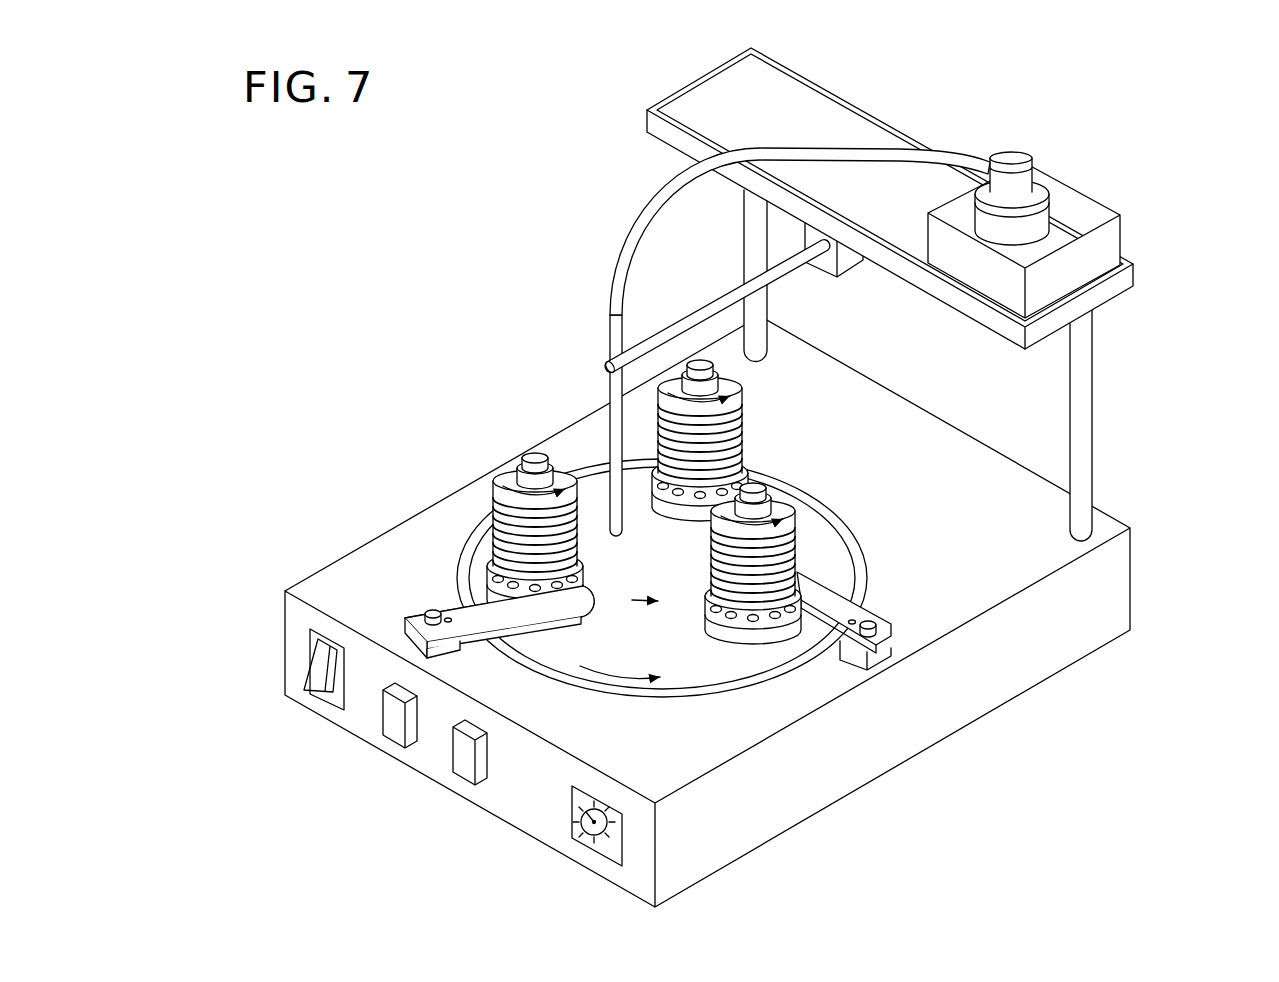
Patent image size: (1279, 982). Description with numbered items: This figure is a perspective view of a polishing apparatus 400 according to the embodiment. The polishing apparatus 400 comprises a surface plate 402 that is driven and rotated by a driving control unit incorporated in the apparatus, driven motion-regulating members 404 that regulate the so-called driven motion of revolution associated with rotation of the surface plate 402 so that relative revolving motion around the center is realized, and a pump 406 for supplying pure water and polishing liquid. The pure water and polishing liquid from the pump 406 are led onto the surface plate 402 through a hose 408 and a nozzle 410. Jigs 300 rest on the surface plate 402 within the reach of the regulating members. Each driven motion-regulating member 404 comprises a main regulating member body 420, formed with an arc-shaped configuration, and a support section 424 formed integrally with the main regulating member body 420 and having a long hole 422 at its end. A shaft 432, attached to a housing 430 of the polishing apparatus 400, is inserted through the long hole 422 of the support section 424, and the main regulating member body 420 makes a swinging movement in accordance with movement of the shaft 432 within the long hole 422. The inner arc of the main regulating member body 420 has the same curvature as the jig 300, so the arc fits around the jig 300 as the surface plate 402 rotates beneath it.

The jig 300 is at (760, 417).
The polishing apparatus 400 is at (703, 477).
The surface plate 402 is at (687, 660).
The driven motion-regulating member 404 is at (822, 580).
The pump 406 is at (1075, 207).
The hose 408 is at (862, 148).
The nozzle 410 is at (611, 432).
The main regulating member body 420 is at (557, 617).
The long hole 422 is at (407, 617).
The support section 424 is at (437, 612).
The housing 430 is at (285, 658).
The shaft 432 is at (428, 608).